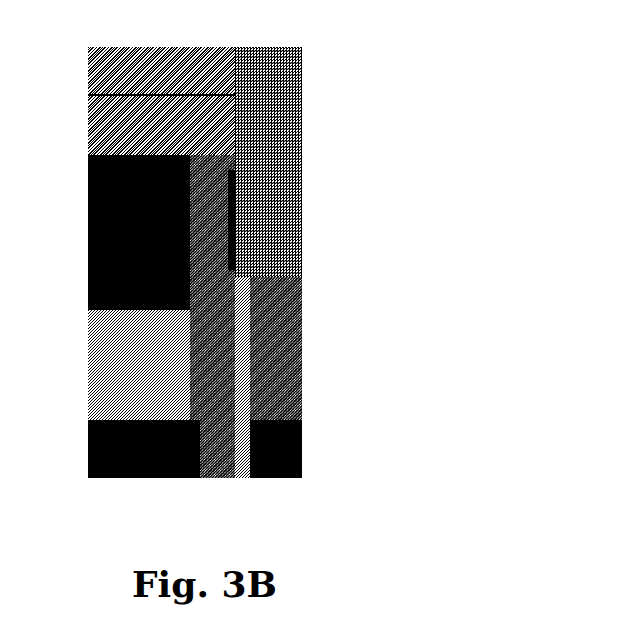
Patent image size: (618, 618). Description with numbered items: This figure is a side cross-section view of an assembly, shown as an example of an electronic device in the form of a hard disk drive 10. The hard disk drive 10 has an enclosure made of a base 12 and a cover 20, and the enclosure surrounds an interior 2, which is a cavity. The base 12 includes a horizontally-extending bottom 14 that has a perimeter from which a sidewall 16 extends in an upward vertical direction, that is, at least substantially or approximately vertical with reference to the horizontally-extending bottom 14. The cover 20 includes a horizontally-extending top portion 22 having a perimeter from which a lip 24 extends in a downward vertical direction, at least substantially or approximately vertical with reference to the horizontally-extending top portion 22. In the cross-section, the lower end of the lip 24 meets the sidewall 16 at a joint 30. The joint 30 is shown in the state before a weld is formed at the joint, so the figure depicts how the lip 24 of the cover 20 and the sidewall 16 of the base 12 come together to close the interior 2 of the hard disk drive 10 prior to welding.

The hard disk drive 10 is at (503, 56).
The cover 20 is at (125, 84).
The horizontally-extending top portion 22 is at (94, 93).
The lip 24 is at (232, 130).
The interior 2 is at (127, 232).
The sidewall 16 is at (210, 177).
The joint 30 is at (246, 216).
The base 12 is at (210, 330).
The horizontally-extending bottom 14 is at (118, 392).